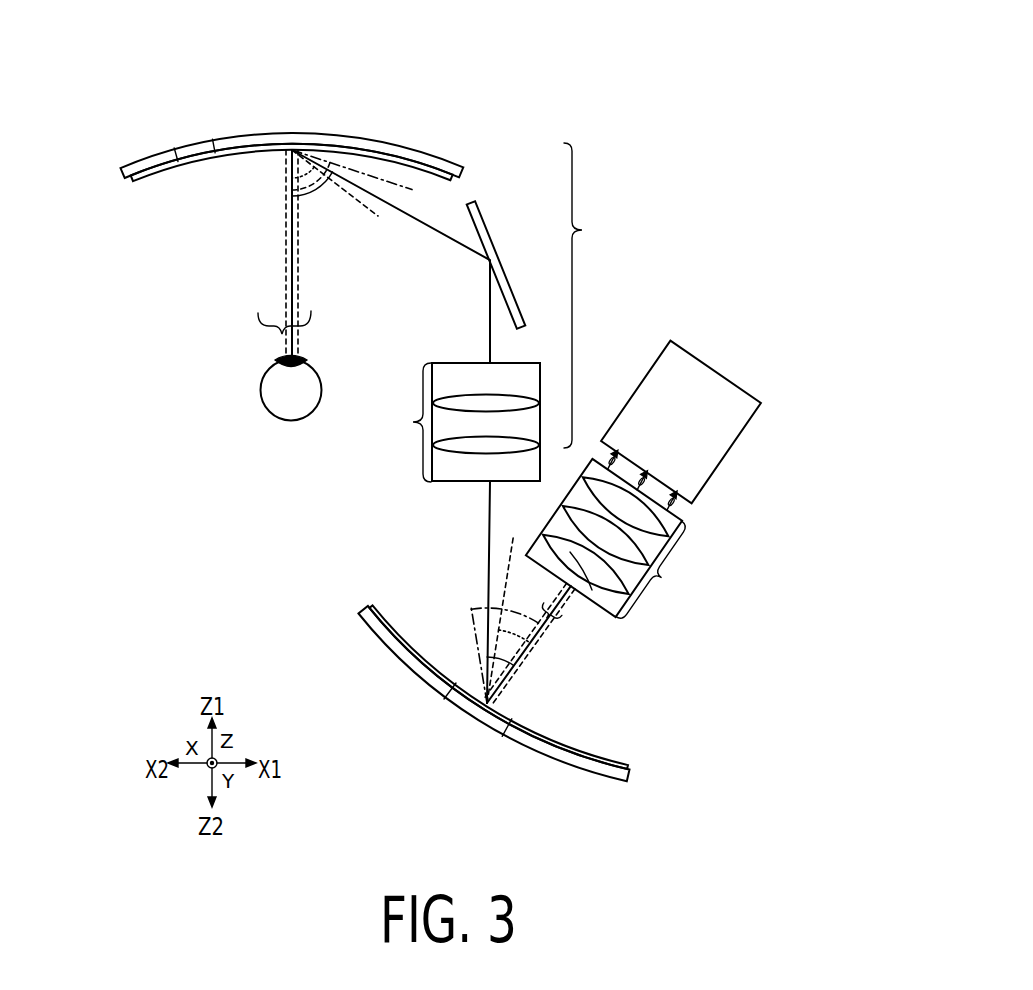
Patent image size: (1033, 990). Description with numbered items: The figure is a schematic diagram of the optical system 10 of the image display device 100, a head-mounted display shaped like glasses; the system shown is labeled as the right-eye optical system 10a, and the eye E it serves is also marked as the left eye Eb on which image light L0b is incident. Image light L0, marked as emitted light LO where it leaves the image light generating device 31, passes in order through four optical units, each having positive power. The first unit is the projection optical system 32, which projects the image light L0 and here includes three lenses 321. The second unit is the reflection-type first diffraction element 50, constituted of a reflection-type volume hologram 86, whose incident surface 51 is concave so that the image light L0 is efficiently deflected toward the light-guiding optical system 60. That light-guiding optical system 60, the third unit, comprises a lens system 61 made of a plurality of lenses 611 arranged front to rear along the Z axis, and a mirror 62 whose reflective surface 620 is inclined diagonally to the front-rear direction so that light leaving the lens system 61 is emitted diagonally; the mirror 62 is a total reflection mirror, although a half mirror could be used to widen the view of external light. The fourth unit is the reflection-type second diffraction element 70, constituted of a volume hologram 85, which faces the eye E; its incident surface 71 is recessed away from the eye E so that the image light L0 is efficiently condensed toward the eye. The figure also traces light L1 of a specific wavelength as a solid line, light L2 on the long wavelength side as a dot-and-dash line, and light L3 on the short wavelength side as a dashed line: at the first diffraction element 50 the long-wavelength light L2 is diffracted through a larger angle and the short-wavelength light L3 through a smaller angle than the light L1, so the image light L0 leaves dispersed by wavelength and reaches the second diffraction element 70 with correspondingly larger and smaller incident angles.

The image display device 100 is at (178, 20).
The optical system 10 is at (462, 124).
The right-eye optical system 10a is at (449, 411).
The second diffraction element 70 is at (333, 133).
The reflection-type volume hologram 85 is at (177, 150).
The incident surface 71 is at (215, 147).
The light-guiding optical system 60 is at (525, 312).
The mirror 62 is at (489, 230).
The reflective surface 620 is at (491, 252).
The lens system 61 is at (506, 422).
The lenses 611 is at (533, 440).
The image light generating device 31 is at (692, 366).
The projection optical system 32 is at (636, 558).
The lenses 321 is at (597, 528).
The image light LO is at (692, 514).
The first diffraction element 50 is at (372, 631).
The incident surface 51 is at (449, 690).
The reflection-type volume hologram 86 is at (506, 734).
The eye E is at (247, 387).
The left eye Eb is at (262, 392).
The image light L0 is at (286, 268).
The image light L0b is at (282, 334).
The light having a specific wavelength L1 is at (389, 212).
The light on the long wavelength side L2 is at (411, 192).
The light on the short wavelength side L3 is at (348, 205).